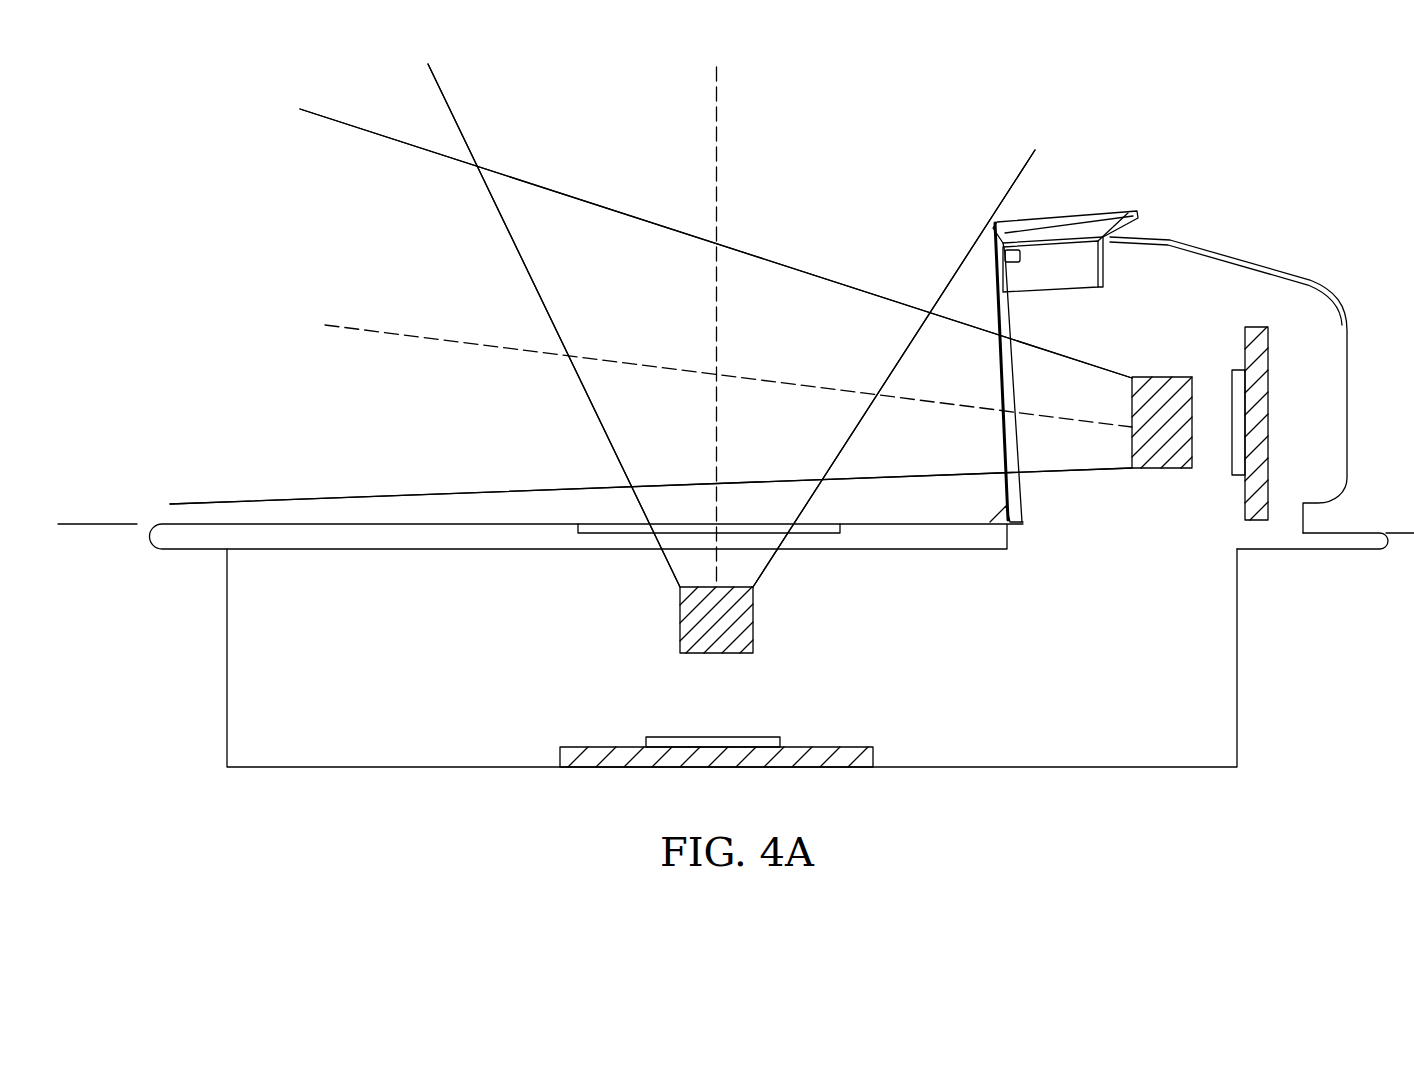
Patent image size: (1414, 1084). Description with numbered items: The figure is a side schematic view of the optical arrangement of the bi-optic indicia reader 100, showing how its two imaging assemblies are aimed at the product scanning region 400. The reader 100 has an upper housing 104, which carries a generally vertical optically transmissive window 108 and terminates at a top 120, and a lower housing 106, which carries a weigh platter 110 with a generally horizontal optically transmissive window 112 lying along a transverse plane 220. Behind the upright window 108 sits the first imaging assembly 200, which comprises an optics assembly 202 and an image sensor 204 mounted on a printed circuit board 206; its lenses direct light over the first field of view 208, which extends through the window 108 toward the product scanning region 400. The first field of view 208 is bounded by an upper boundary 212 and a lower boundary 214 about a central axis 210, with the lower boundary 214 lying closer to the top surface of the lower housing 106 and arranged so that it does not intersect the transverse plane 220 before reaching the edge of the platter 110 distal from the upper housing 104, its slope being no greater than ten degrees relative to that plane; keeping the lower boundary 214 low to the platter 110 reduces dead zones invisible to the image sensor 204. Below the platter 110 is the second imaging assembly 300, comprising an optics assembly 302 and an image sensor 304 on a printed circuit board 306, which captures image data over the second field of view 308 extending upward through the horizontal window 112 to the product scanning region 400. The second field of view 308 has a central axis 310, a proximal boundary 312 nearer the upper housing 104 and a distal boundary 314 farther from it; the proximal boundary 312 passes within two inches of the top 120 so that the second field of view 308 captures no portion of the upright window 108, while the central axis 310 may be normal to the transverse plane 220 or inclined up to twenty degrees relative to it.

The bi-optic indicia reader 100 is at (1058, 124).
The upper housing 104 is at (1190, 240).
The lower housing 106 is at (265, 735).
The optically transmissive window 108 is at (1012, 318).
The weigh platter 110 is at (258, 523).
The optically transmissive window 112 is at (605, 522).
The top of the upper housing 120 is at (1084, 198).
The first imaging assembly 200 is at (1202, 538).
The optics assembly 202 is at (1162, 468).
The image sensor 204 is at (1232, 372).
The printed circuit board 206 is at (1243, 327).
The first field of view 208 is at (348, 123).
The FFOV central axis 210 is at (365, 328).
The FFOV upper boundary 212 is at (577, 197).
The FFOV lower boundary 214 is at (407, 497).
The transverse plane 220 is at (98, 522).
The second imaging assembly 300 is at (634, 638).
The optics assembly 302 is at (753, 620).
The image sensor 304 is at (655, 737).
The printed circuit board 306 is at (850, 747).
The second field of view 308 is at (532, 283).
The SFOV central axis 310 is at (718, 316).
The SFOV proximal boundary 312 is at (906, 341).
The SFOV distal boundary 314 is at (503, 222).
The product scanning region 400 is at (800, 145).